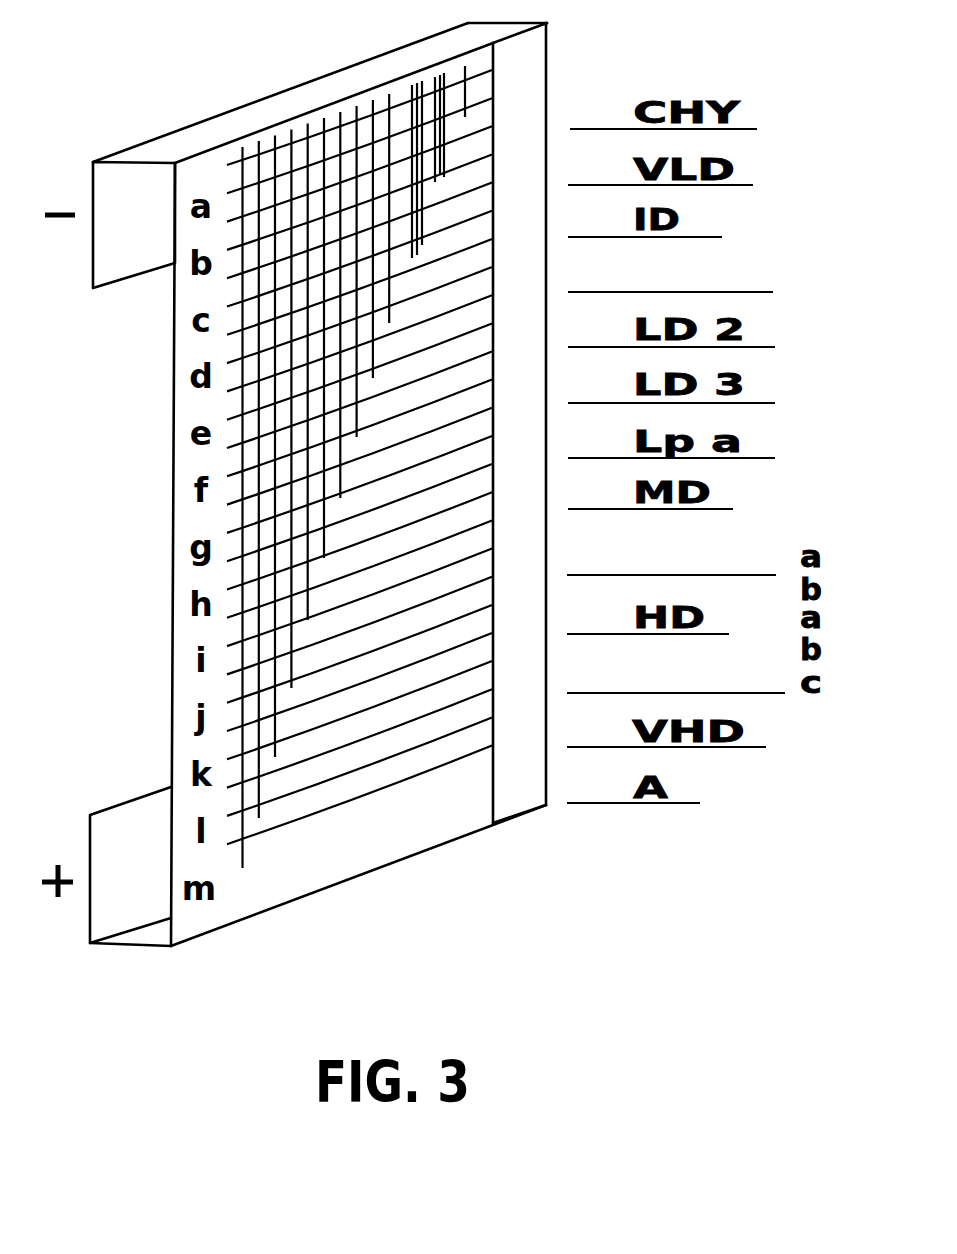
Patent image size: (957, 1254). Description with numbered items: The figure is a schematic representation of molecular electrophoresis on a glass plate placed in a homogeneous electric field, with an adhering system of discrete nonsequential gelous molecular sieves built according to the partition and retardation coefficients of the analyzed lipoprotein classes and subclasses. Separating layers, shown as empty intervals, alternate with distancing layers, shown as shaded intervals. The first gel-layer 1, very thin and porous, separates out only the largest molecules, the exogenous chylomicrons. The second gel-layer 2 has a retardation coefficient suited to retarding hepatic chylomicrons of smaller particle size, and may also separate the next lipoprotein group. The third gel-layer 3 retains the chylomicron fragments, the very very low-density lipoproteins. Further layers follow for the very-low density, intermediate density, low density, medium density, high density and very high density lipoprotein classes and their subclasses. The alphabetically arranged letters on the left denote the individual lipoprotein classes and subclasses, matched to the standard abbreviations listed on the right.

The first gel-layer 1 is at (670, 274).
The second gel-layer 2 is at (672, 591).
The third gel-layer 3 is at (676, 668).